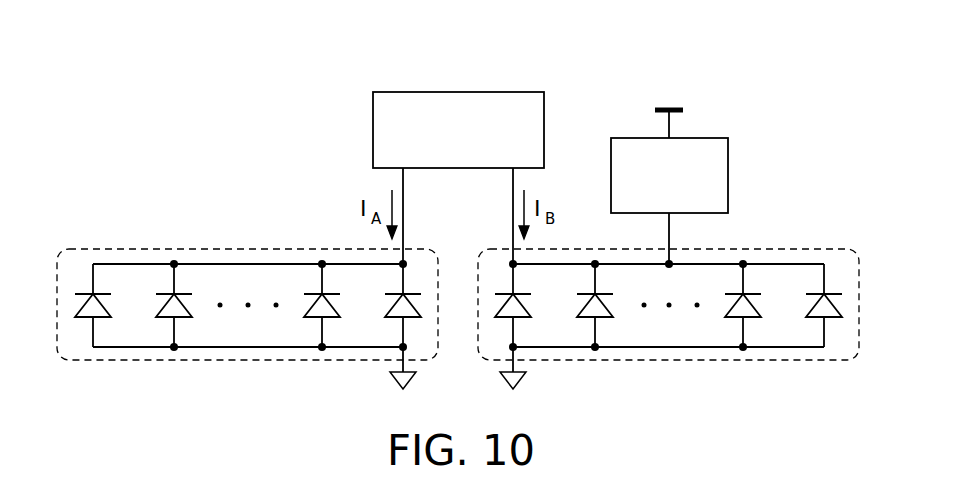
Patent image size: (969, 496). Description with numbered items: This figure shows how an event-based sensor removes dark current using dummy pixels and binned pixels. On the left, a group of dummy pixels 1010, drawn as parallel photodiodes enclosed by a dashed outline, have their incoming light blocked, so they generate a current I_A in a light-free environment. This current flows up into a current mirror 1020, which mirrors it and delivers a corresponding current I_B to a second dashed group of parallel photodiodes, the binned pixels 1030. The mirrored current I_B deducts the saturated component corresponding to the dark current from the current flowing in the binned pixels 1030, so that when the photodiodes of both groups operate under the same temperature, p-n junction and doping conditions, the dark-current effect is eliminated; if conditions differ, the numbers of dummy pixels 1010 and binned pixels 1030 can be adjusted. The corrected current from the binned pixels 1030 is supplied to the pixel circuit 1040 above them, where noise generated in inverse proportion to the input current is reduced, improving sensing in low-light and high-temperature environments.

The dummy pixels 1010 is at (248, 360).
The current mirror 1020 is at (458, 92).
The binned pixels 1030 is at (669, 360).
The pixel circuit 1040 is at (728, 168).